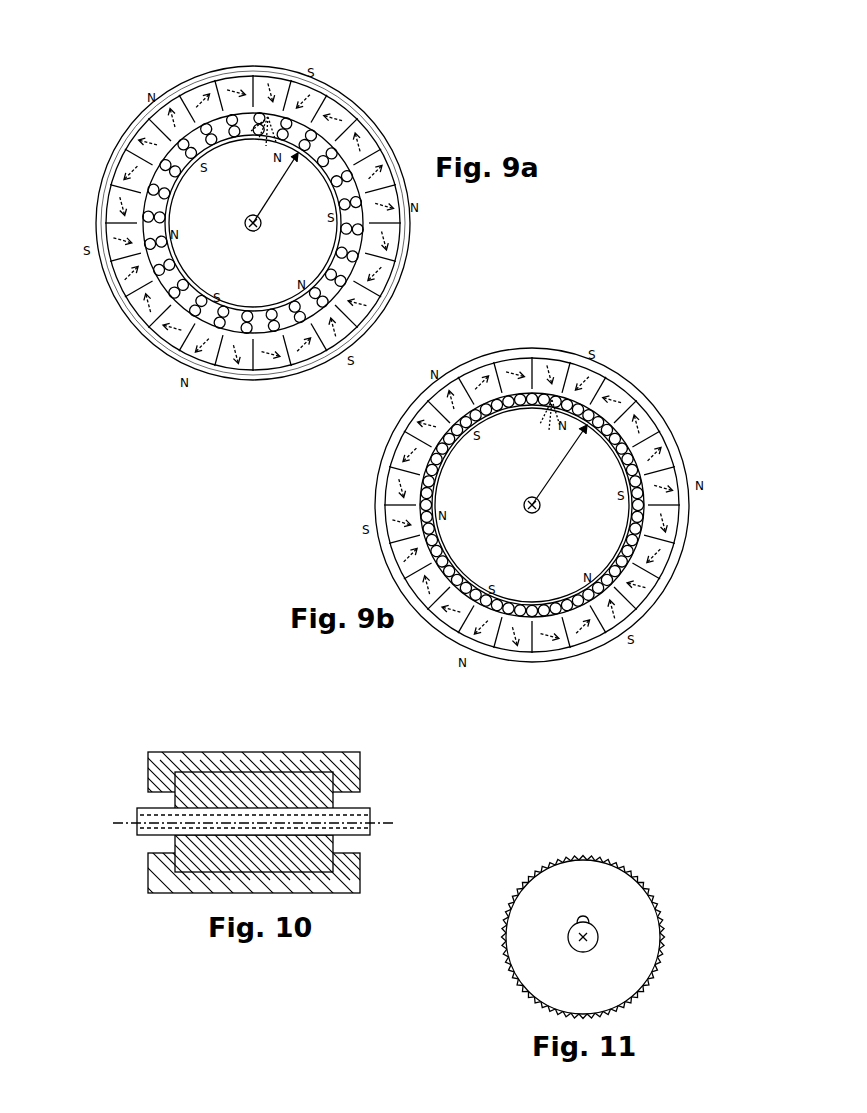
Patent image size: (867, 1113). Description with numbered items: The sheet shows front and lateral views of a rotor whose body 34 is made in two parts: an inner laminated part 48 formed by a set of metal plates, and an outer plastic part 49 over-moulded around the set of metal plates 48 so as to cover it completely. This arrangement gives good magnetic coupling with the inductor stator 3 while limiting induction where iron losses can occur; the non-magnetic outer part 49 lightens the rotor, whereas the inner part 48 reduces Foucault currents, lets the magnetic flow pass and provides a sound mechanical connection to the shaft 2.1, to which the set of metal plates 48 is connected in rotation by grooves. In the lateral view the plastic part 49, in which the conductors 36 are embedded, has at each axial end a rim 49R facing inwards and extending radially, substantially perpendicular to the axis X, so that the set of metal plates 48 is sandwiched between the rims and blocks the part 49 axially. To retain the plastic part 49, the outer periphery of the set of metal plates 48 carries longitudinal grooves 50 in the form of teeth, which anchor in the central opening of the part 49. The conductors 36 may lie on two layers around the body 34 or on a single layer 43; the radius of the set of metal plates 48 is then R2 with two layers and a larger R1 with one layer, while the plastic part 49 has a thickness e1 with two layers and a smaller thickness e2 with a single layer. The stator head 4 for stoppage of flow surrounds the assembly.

In FIG. 9A, the inductor stator 3 is at (247, 52).
In FIG. 9A, the head for stoppage of flow 4 is at (397, 277).
In FIG. 9B, the head for stoppage of flow 4 is at (680, 548).
In FIG. 9A, the body of the rotor 34 is at (203, 258).
In FIG. 9B, the body of the rotor 34 is at (480, 540).
In FIG. 9A, the conductors 36 is at (367, 120).
In FIG. 9B, the conductors 36 is at (650, 468).
In FIG. 9B, the single layer 43 is at (612, 588).
In FIG. 9A, the inner laminated part 48 is at (253, 223).
In FIG. 9B, the inner laminated part 48 is at (532, 505).
In FIG. 10, the inner laminated part 48 is at (281, 776).
In FIG. 11, the inner laminated part 48 is at (617, 902).
In FIG. 9A, the outer plastic part 49 is at (115, 150).
In FIG. 9B, the outer plastic part 49 is at (610, 397).
In FIG. 10, the outer plastic part 49 is at (305, 762).
In FIG. 10, the rim 49R is at (383, 780).
In FIG. 11, the grooves 50 is at (563, 858).
In FIG. 10, the shaft 2.1 is at (138, 818).
In FIG. 10, the axis X is at (392, 822).
In FIG. 11, the axis X is at (593, 947).
In FIG. 9B, the thickness e1 is at (552, 400).
In FIG. 9A, the thickness e2 is at (268, 117).
In FIG. 9B, the radius R1 is at (577, 453).
In FIG. 9A, the radius R2 is at (287, 192).